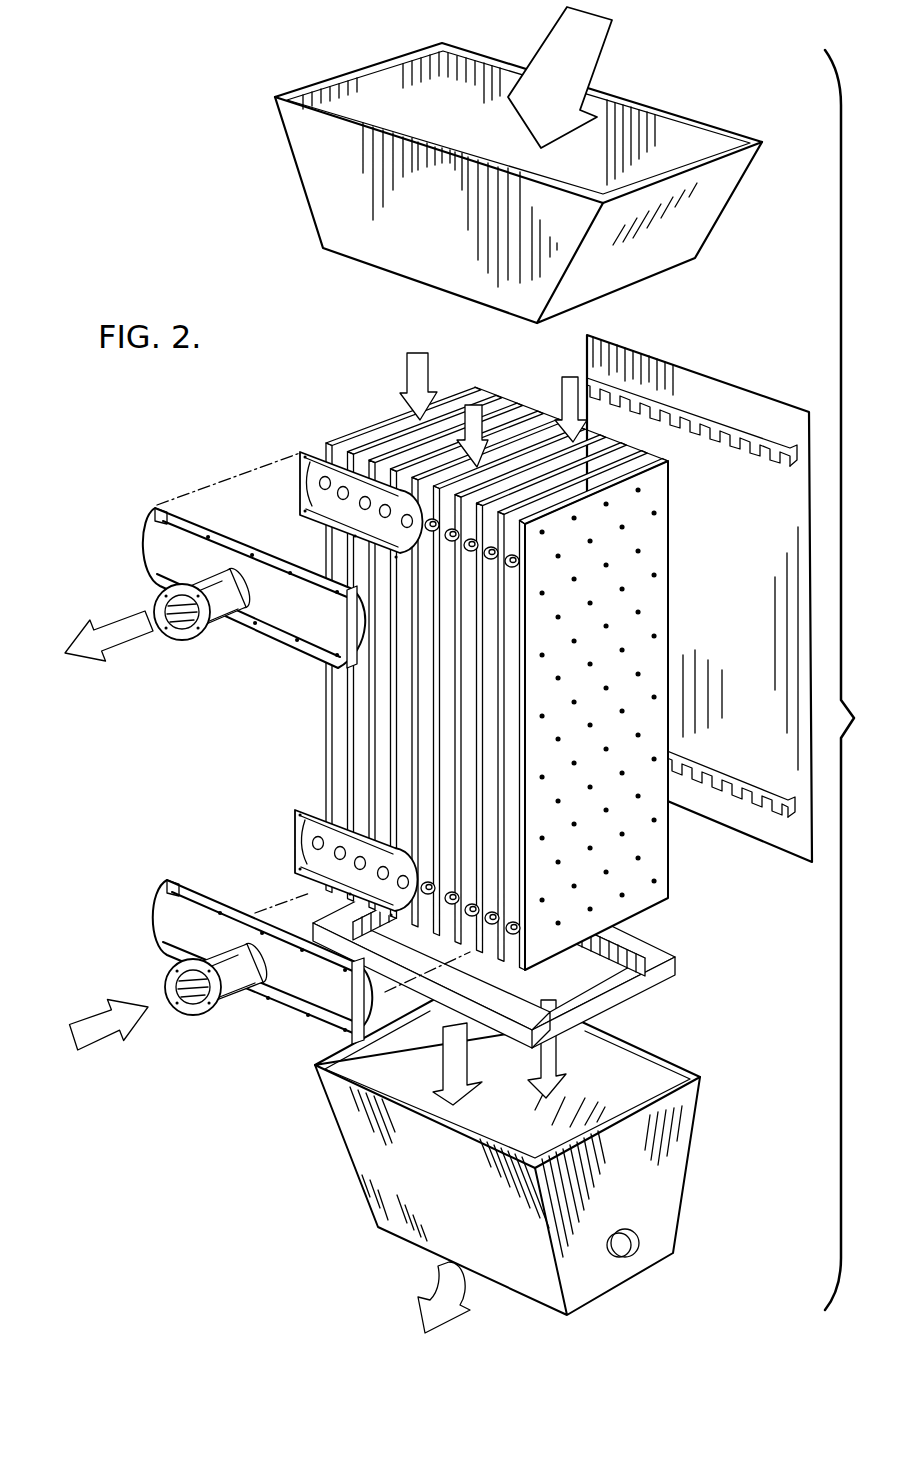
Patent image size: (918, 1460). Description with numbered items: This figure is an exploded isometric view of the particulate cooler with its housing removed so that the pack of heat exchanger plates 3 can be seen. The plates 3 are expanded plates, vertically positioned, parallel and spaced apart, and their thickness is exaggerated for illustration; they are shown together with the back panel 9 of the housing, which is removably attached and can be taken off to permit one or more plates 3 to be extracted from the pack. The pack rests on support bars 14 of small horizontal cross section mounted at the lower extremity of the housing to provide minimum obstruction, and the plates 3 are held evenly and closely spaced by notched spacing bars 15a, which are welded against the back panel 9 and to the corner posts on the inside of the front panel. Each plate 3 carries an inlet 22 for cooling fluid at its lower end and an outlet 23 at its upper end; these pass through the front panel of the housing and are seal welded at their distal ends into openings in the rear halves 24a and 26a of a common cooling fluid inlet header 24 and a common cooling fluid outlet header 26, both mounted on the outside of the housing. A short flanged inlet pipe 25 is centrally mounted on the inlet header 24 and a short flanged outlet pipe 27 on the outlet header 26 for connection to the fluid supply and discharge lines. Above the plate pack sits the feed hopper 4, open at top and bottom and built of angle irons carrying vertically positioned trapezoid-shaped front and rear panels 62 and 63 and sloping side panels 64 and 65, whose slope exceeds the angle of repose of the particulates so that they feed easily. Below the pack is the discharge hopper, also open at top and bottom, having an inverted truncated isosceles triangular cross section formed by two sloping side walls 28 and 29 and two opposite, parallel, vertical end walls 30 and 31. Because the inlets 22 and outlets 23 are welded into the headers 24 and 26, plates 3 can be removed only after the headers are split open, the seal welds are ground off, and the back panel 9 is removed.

The heat exchanger plates 3 is at (663, 882).
The feed hopper 4 is at (498, 165).
The back panel 9 is at (718, 398).
The support bars 14 is at (667, 982).
The notched spacing bars 15a is at (780, 815).
The inlet 22 is at (520, 931).
The outlet 23 is at (513, 563).
The common cooling fluid inlet header 24 is at (221, 992).
The rear half of inlet header 24a is at (322, 1032).
The inlet pipe 25 is at (235, 993).
The common cooling fluid outlet header 26 is at (215, 616).
The rear half of outlet header 26a is at (318, 651).
The outlet pipe 27 is at (222, 617).
The sloping side wall 28 is at (518, 1198).
The sloping side wall 29 is at (660, 1057).
The vertical end wall 30 is at (372, 1070).
The vertical end wall 31 is at (673, 1183).
The front panel 62 is at (343, 197).
The rear panel 63 is at (665, 123).
The side panel 64 is at (647, 262).
The side panel 65 is at (350, 72).